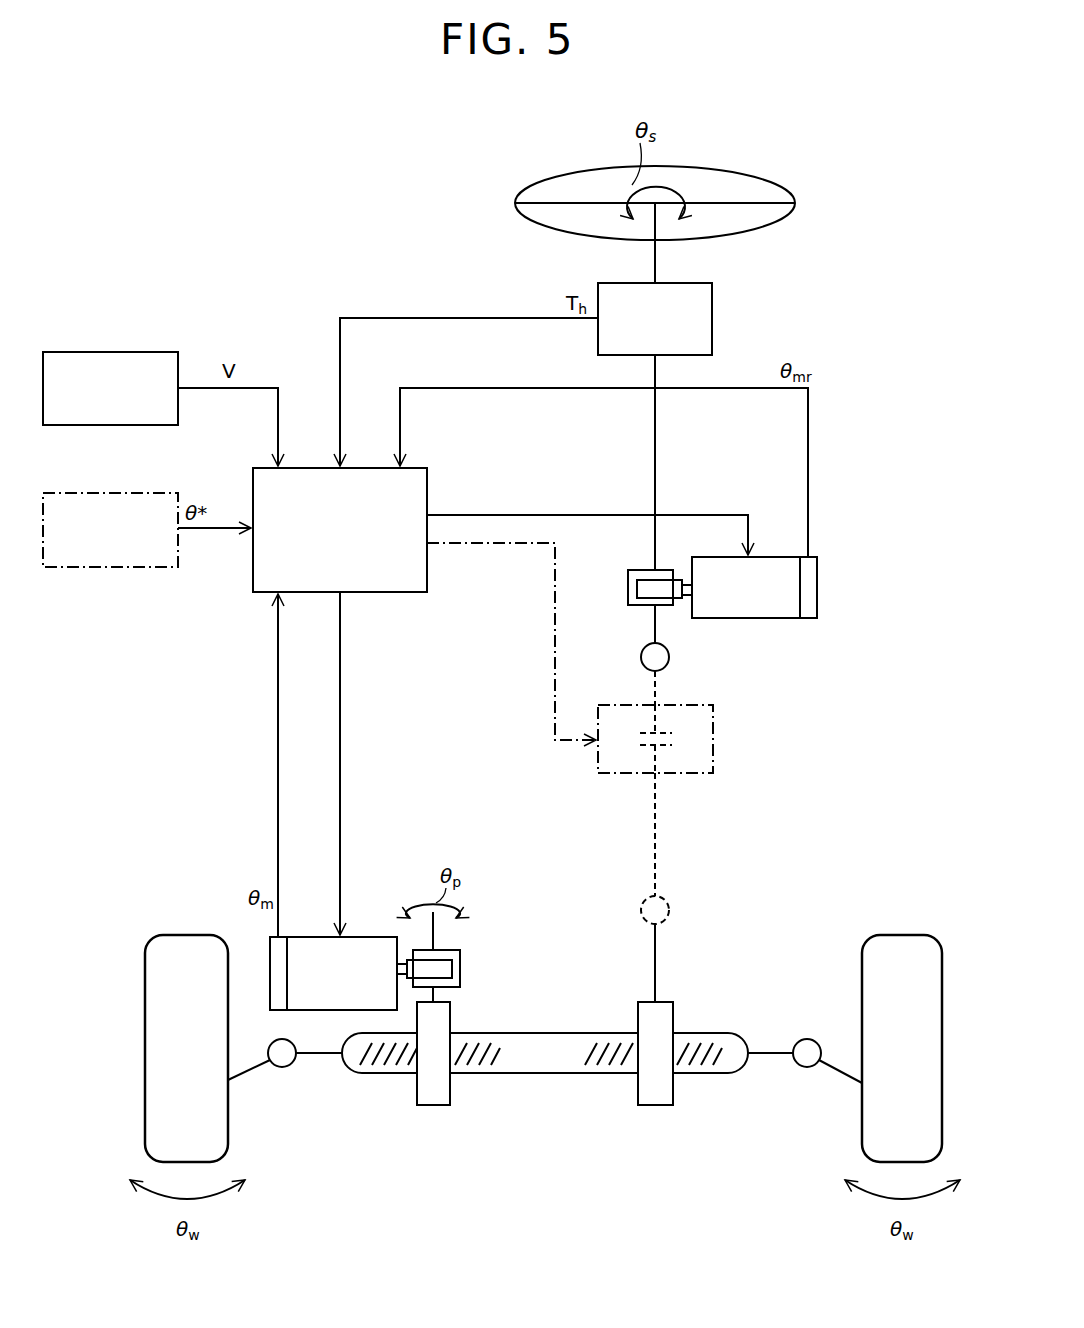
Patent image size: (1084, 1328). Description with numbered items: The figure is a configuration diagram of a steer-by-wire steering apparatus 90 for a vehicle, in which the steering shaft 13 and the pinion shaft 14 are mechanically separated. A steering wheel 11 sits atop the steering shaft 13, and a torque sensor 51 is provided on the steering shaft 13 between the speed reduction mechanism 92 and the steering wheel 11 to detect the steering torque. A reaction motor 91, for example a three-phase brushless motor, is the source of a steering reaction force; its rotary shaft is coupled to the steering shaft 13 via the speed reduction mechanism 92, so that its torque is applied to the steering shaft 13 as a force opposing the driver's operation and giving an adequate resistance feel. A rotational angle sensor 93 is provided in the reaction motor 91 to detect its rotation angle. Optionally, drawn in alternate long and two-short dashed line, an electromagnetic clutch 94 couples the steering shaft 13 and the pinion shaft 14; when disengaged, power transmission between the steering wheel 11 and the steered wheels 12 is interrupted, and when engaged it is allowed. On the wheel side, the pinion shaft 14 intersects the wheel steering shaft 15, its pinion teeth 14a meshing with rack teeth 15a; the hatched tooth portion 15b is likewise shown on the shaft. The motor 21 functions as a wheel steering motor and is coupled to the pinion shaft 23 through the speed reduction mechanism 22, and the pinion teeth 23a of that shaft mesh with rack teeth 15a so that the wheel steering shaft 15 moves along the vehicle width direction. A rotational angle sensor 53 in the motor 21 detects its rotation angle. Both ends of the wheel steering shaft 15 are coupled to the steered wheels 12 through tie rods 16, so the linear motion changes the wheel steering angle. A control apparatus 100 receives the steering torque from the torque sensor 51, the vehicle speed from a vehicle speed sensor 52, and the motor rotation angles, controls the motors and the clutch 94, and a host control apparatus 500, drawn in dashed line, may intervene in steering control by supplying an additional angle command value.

The steering apparatus 90 is at (814, 170).
The steering wheel 11 is at (718, 170).
The steering shaft 13 is at (660, 262).
The torque sensor 51 is at (712, 318).
The vehicle speed sensor 52 is at (100, 352).
The host control apparatus 500 is at (110, 567).
The control apparatus 100 is at (405, 592).
The reaction motor 91 is at (780, 618).
The speed reduction mechanism 92 is at (624, 584).
The rotational angle sensor 93 is at (806, 618).
The clutch 94 is at (713, 745).
The pinion shaft 14 is at (652, 968).
The pinion teeth 14a is at (660, 1105).
The motor 21 is at (372, 937).
The speed reduction mechanism 22 is at (467, 980).
The pinion shaft 23 is at (444, 936).
The pinion teeth 23a is at (433, 1105).
The rotational angle sensor 53 is at (268, 982).
The wheel steering shaft 15 is at (540, 1073).
The rack teeth 15a is at (610, 1058).
The rack teeth 15b is at (468, 1060).
The tie rods 16 is at (313, 1060).
The steered wheels 12 is at (228, 1128).